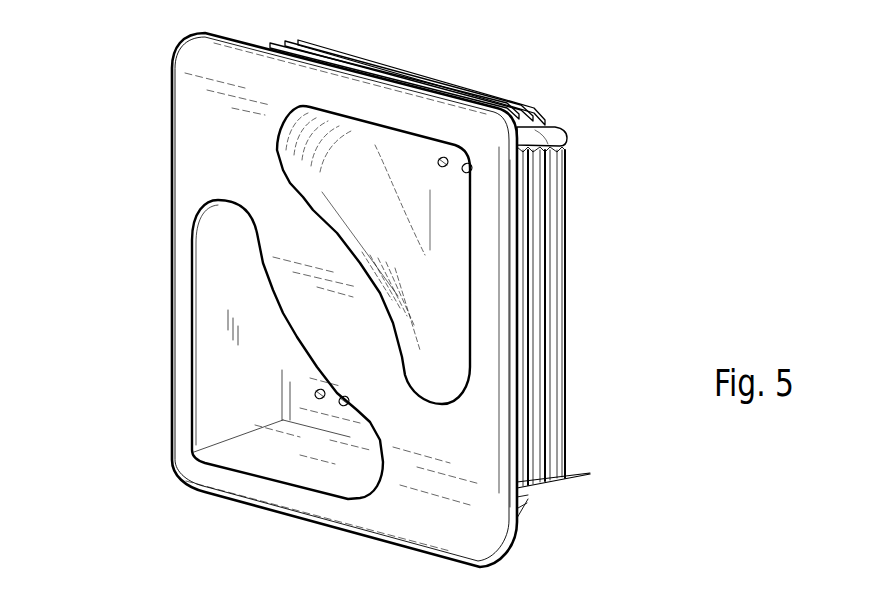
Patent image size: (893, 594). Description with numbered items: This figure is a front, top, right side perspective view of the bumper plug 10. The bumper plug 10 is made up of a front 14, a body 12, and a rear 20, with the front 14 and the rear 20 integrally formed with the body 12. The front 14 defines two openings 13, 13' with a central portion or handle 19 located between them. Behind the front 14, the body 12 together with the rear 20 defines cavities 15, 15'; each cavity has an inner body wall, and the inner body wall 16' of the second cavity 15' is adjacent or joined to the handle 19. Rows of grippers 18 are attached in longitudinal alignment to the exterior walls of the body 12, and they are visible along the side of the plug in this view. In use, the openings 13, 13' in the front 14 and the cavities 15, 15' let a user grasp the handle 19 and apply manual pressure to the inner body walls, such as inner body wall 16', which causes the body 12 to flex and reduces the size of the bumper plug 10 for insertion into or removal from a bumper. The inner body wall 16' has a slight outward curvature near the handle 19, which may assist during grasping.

The bumper plug 10 is at (55, 118).
The body 12 is at (297, 421).
The opening 13 is at (243, 349).
The opening 13' is at (375, 215).
The front 14 is at (210, 67).
The cavity 15 is at (236, 417).
The cavity 15' is at (491, 148).
The inner body wall 16' is at (465, 231).
The grippers 18 is at (275, 44).
The handle 19 is at (362, 357).
The rear 20 is at (460, 184).